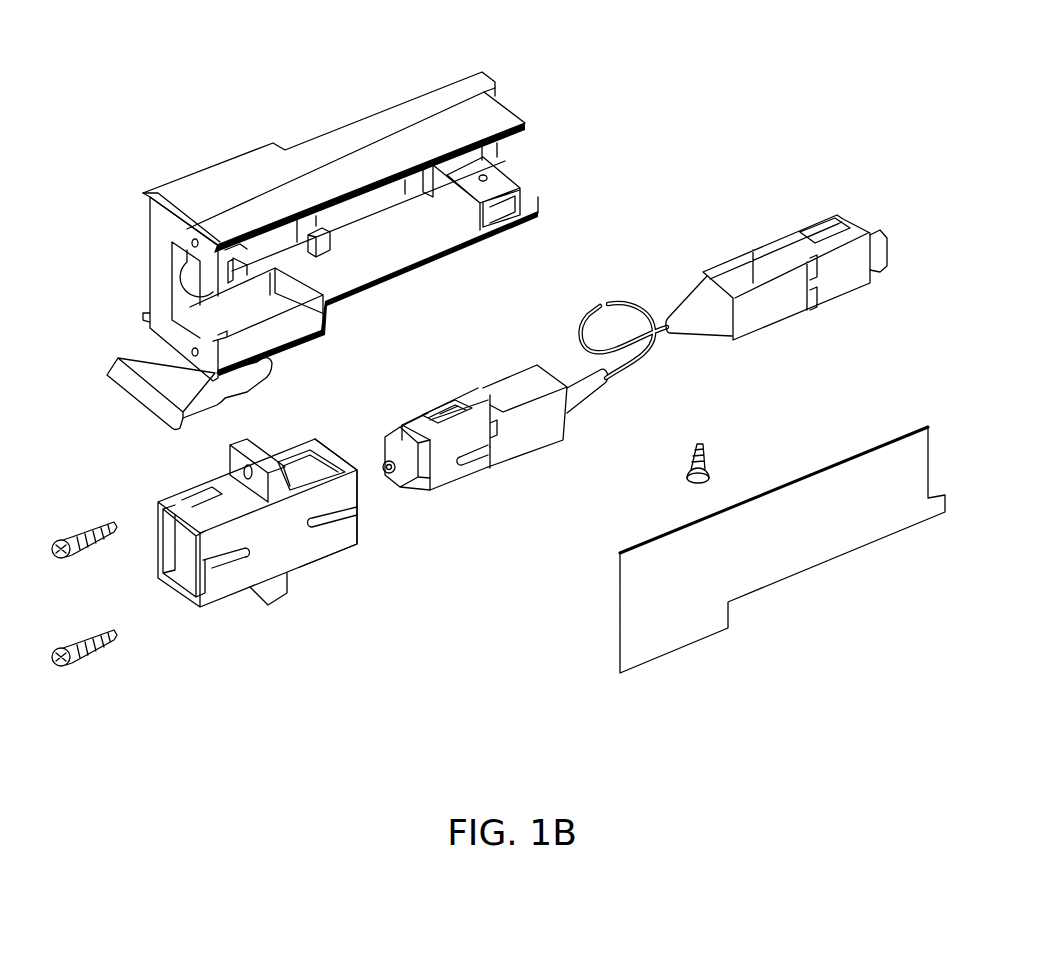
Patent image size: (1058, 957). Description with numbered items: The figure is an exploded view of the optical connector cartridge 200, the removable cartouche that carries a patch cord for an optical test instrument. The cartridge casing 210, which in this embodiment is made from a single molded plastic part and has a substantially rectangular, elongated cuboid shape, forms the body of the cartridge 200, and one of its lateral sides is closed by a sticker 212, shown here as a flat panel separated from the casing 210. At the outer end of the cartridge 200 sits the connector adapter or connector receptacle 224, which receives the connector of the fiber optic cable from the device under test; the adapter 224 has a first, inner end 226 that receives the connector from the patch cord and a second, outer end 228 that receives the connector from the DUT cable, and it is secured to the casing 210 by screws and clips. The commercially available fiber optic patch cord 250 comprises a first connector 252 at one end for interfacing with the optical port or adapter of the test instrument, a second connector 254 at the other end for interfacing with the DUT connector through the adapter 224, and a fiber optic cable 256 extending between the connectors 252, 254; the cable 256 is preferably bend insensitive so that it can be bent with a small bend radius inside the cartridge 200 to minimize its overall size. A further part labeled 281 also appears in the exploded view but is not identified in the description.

The optical connector cartridge 200 is at (754, 74).
The cartridge casing 210 is at (380, 128).
The sticker 212 is at (677, 623).
The connector adapter 224 is at (283, 537).
The first end 226 is at (343, 530).
The second end 228 is at (183, 583).
The fiber optic patch cord 250 is at (745, 365).
The first connector 252 is at (847, 280).
The second connector 254 is at (530, 427).
The fiber optic cable 256 is at (627, 370).
The latch tab 281 is at (140, 363).